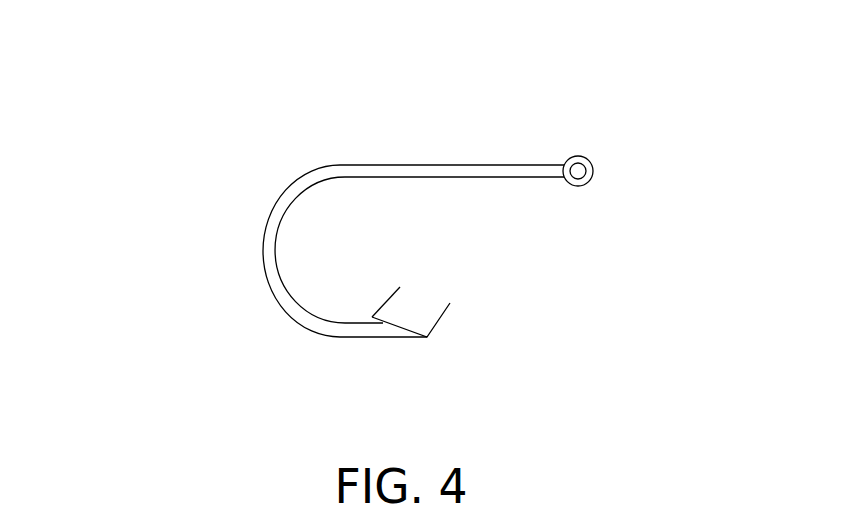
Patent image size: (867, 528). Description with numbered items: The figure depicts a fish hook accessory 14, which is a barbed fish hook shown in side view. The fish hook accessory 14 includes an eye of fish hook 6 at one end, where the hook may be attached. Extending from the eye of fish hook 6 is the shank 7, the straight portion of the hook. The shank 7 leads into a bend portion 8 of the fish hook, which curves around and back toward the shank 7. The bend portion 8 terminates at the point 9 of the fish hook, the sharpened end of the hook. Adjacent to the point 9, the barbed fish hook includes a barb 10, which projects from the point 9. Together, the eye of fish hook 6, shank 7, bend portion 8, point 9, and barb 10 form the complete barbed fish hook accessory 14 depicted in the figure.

The fish hook accessory 14 is at (178, 56).
The eye of fish hook 6 is at (589, 160).
The shank 7 is at (442, 172).
The bend portion 8 is at (263, 243).
The point 9 is at (450, 303).
The barb 10 is at (400, 287).